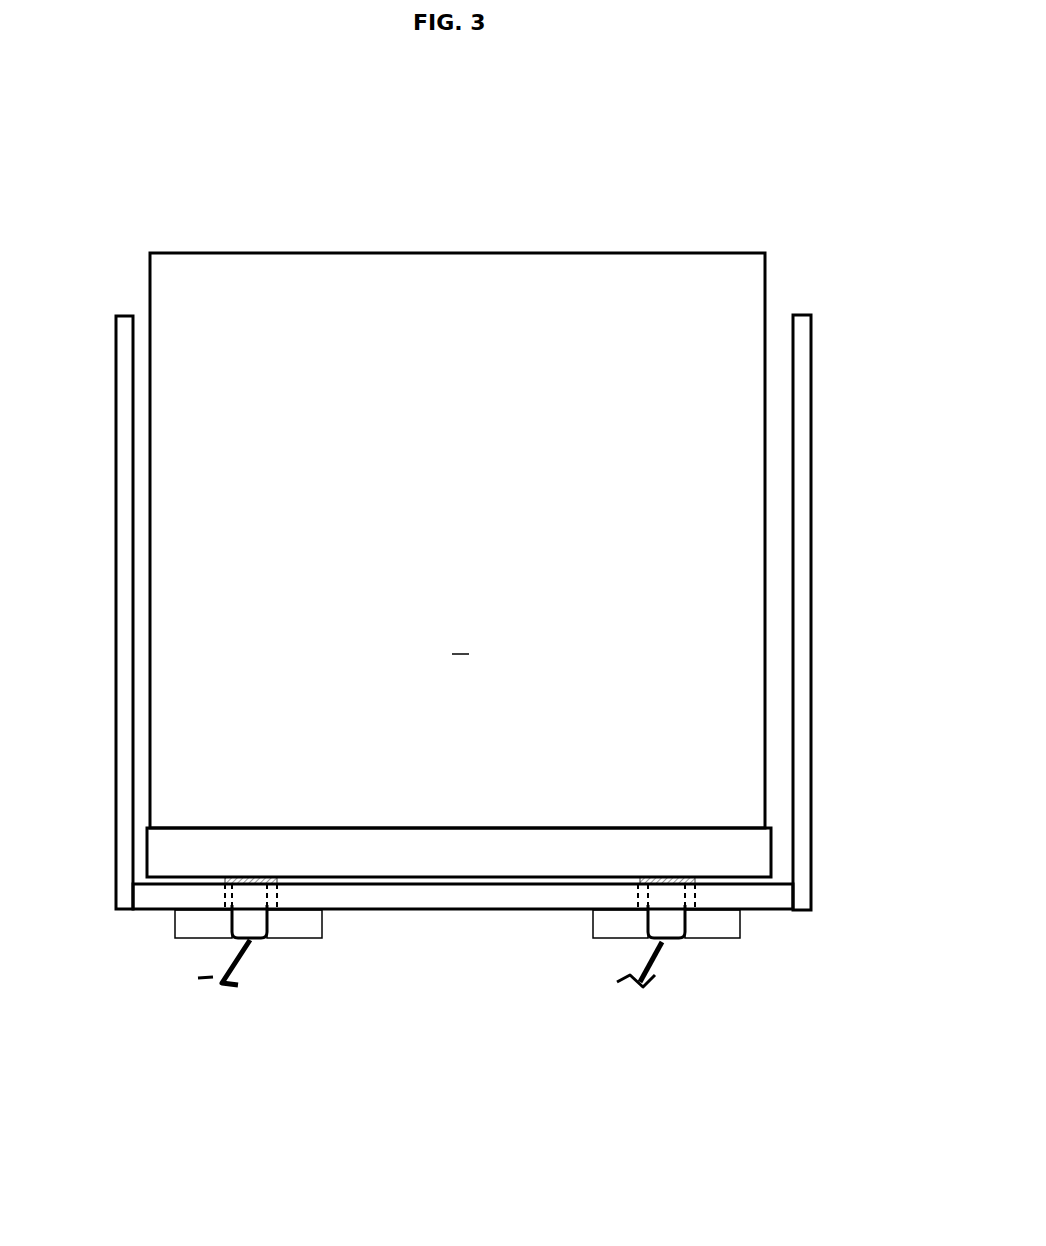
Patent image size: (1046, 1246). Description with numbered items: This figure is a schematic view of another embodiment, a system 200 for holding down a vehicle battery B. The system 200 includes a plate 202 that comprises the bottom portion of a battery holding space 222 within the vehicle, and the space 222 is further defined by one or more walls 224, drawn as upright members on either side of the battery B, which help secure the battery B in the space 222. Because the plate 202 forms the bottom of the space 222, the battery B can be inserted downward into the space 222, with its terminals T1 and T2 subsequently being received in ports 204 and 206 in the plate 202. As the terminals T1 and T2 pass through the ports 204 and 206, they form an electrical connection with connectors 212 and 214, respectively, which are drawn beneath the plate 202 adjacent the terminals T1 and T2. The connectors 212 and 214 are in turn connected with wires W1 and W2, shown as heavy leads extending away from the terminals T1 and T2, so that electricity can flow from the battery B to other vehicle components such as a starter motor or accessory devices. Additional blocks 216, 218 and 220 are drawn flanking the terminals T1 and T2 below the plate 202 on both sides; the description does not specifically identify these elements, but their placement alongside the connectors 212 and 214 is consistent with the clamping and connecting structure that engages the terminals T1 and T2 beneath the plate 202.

The system 200 is at (719, 79).
The plate 202 is at (413, 890).
The port 204 is at (695, 895).
The port 206 is at (227, 893).
The connector 212 is at (637, 943).
The connector 214 is at (268, 945).
The first retaining block 216 is at (618, 933).
The second retaining block 218 is at (318, 935).
The retaining blocks 220 is at (225, 927).
The battery holding space 222 is at (775, 230).
The wall 224 is at (804, 754).
The battery B is at (460, 643).
The terminal T1 is at (663, 925).
The terminal T2 is at (248, 925).
The wire W1 is at (658, 962).
The wire W2 is at (233, 956).